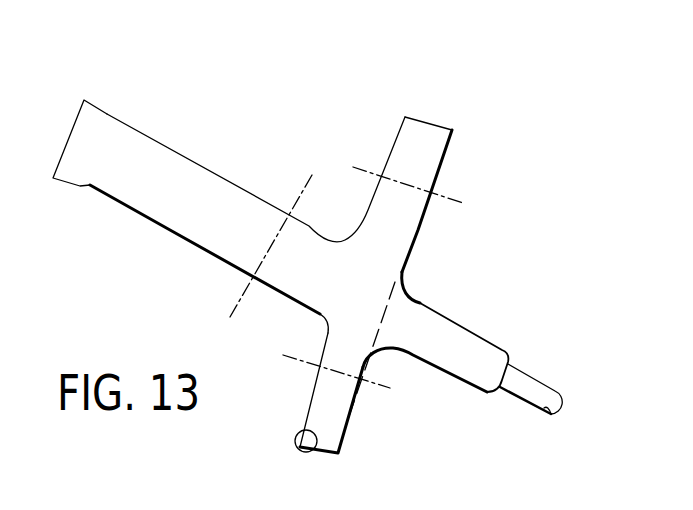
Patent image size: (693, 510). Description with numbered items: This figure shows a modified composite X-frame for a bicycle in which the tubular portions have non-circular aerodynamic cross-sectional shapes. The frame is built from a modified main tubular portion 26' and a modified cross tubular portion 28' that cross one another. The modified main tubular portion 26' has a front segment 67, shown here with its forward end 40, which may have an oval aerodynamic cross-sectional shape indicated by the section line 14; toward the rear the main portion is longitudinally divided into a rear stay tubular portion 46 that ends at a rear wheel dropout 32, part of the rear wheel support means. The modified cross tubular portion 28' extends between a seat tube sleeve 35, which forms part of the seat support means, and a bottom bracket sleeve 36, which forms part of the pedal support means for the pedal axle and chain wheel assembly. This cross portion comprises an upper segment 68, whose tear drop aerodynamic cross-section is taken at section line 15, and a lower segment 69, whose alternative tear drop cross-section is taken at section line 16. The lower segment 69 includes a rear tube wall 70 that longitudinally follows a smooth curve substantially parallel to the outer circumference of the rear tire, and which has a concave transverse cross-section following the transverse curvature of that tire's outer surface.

The section line 14- 14 is at (253, 172).
The section line 15- 15 is at (377, 127).
The section line 16- 16 is at (277, 405).
The modified main tubular portion 26' is at (256, 174).
The modified cross tubular portion 28' is at (458, 183).
The rear wheel dropout 32 is at (535, 388).
The seat tube sleeve 35 is at (410, 128).
The bottom bracket sleeve 36 is at (303, 441).
The end of first arm 40 is at (95, 117).
The rear stay tubular portion 46 is at (448, 358).
The front segment 67 is at (183, 222).
The upper segment 68 is at (390, 223).
The lower segment 69 is at (342, 328).
The rear tube wall 70 is at (380, 303).